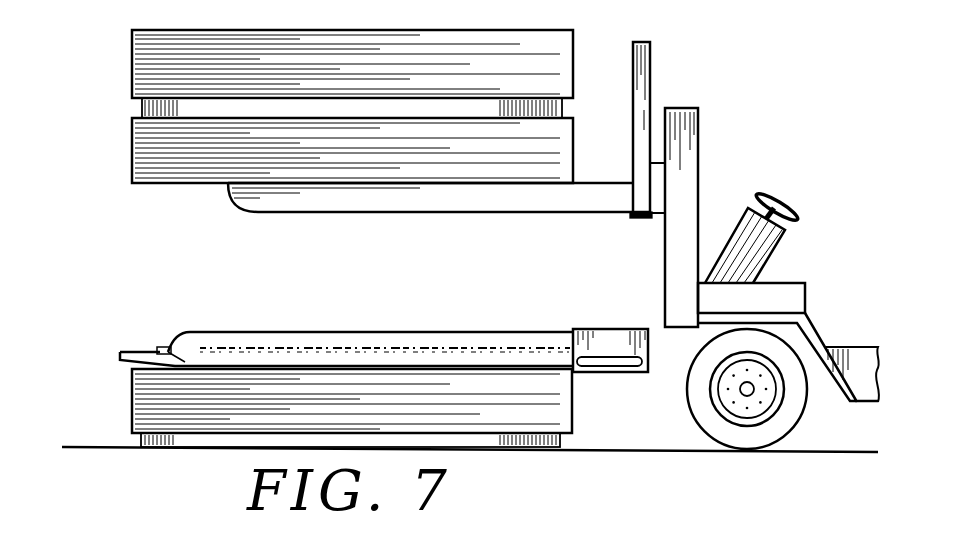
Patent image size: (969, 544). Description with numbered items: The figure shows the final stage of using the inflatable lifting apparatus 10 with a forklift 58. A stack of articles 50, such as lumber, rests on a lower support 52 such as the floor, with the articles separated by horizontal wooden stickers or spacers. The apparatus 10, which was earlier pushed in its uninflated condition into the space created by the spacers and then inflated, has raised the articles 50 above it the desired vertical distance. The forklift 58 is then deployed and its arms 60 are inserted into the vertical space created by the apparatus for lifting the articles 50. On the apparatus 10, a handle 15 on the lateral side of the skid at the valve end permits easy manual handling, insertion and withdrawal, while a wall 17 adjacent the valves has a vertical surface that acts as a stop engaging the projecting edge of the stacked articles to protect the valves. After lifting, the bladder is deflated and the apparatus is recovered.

The apparatus 10 is at (326, 320).
The handle 15 is at (597, 360).
The wall 17 is at (597, 335).
The stacked articles 50 is at (142, 65).
The lower support 52 is at (590, 447).
The forklift 58 is at (785, 283).
The fork arms 60 is at (460, 202).